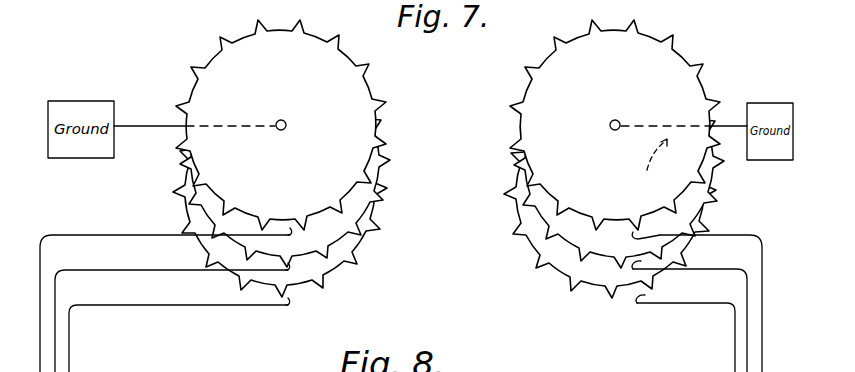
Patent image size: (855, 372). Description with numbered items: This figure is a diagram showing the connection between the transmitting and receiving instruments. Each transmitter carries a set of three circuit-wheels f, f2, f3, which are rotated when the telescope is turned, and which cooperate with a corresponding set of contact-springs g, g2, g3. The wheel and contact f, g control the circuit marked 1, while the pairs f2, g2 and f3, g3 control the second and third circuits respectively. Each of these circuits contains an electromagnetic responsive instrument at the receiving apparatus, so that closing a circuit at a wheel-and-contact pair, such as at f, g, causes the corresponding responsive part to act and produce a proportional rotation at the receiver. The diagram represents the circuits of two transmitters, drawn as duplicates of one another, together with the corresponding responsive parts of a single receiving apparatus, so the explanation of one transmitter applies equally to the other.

The circuit-wheel f is at (534, 93).
The circuit-wheel f2 is at (547, 213).
The circuit-wheel f3 is at (563, 258).
The contact-spring g is at (638, 238).
The contact-spring g2 is at (637, 268).
The contact-spring g3 is at (639, 303).
The circuit 1 is at (762, 345).